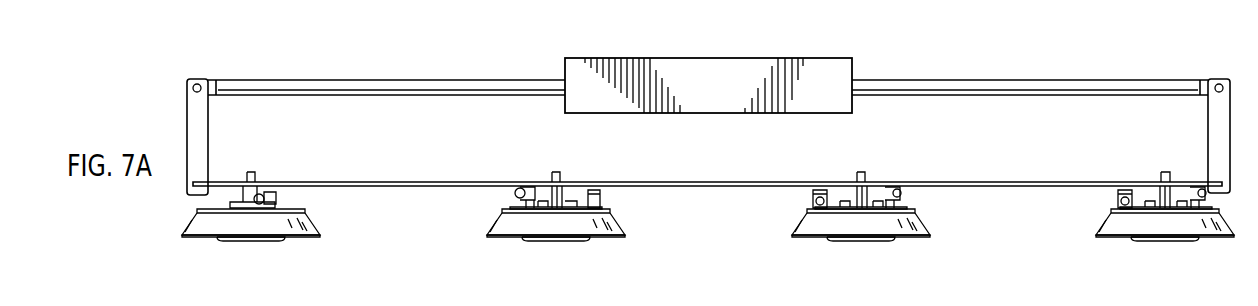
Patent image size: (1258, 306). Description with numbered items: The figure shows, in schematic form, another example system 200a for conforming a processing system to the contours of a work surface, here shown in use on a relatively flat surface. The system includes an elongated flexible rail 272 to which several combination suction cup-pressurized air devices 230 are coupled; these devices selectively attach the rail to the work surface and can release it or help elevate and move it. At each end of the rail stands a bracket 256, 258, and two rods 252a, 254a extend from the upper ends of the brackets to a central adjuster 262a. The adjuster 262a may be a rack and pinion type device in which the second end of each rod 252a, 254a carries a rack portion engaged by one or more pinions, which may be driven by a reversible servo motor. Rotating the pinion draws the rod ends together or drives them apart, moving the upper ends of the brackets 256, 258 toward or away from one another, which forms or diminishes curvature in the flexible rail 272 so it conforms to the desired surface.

The system 200a is at (398, 44).
The bracket 258 is at (203, 124).
The bracket 256 is at (1217, 114).
The rod 254a is at (445, 91).
The rod 252a is at (1000, 80).
The adjuster 262a is at (838, 67).
The flexible rail 272 is at (733, 184).
The suction cup-pressurized air device 230 is at (928, 232).